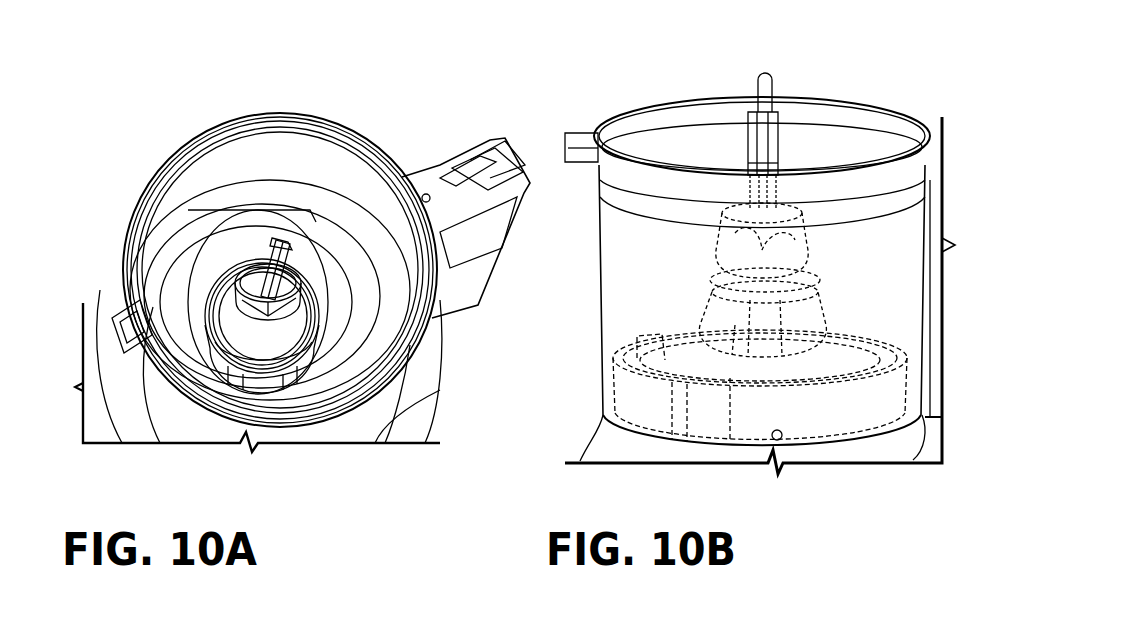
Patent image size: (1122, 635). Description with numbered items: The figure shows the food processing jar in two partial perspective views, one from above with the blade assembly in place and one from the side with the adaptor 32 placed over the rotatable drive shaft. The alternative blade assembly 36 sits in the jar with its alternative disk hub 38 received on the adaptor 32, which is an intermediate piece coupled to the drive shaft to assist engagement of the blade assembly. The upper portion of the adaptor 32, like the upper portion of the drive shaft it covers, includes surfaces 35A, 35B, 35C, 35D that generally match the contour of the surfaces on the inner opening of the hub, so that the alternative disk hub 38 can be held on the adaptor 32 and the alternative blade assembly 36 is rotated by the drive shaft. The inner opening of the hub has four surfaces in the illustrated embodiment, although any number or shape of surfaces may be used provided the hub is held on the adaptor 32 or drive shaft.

In FIG. 10A, the adaptor 32 is at (247, 333).
In FIG. 10B, the adaptor 32 is at (797, 243).
In FIG. 10A, the alternative blade assembly 36 is at (246, 240).
In FIG. 10B, the alternative blade assembly 36 is at (832, 280).
In FIG. 10A, the alternative disk hub 38 is at (350, 280).
In FIG. 10B, the alternative disk hub 38 is at (707, 273).
In FIG. 10A, the surface 35A is at (325, 238).
In FIG. 10B, the surface 35A is at (787, 117).
In FIG. 10A, the surface 35B is at (256, 272).
In FIG. 10B, the surface 35B is at (750, 130).
In FIG. 10A, the surface 35C is at (300, 380).
In FIG. 10B, the surface 35C is at (747, 138).
In FIG. 10A, the surface 35D is at (280, 248).